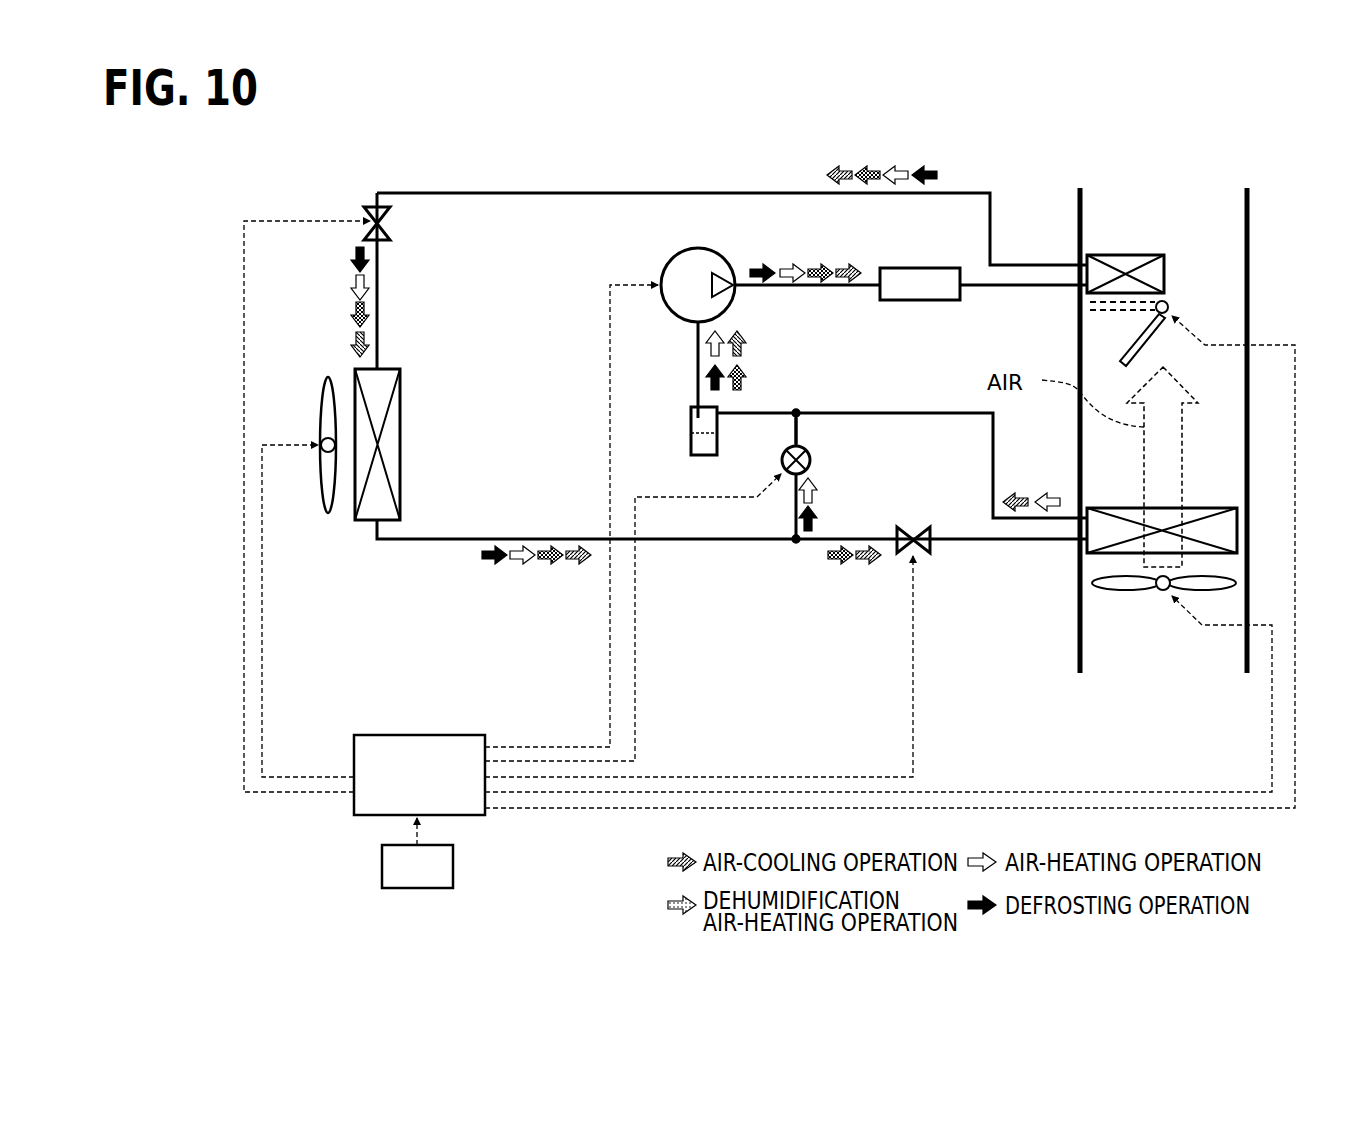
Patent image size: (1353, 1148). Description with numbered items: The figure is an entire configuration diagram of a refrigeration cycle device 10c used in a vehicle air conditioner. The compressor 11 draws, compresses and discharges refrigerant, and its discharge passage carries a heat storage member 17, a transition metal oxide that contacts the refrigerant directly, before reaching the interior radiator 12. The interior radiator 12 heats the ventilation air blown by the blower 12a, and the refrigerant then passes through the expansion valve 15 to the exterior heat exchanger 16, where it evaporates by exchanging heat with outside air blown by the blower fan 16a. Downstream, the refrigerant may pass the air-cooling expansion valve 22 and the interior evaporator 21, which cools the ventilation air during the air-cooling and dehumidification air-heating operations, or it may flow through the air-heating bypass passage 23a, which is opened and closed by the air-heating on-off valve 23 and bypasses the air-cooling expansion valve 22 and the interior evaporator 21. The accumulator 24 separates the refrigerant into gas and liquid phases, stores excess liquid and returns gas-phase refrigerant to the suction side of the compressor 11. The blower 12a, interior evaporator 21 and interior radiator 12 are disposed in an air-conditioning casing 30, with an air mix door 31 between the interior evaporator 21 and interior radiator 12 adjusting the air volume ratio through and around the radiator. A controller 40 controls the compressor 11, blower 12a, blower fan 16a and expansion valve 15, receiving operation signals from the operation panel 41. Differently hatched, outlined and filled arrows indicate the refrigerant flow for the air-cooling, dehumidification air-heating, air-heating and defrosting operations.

The refrigeration cycle device 10c is at (968, 172).
The compressor 11 is at (722, 258).
The interior radiator 12 is at (1128, 255).
The blower 12a is at (1130, 591).
The expansion valve 15 is at (372, 212).
The exterior heat exchanger 16 is at (401, 420).
The blower fan 16a is at (323, 498).
The heat storage member 17 is at (920, 268).
The interior evaporator 21 is at (1200, 508).
The air-cooling expansion valve 22 is at (916, 535).
The air-heating on-off valve 23 is at (786, 451).
The air-heating bypass passage 23a is at (800, 432).
The accumulator 24 is at (690, 448).
The air-conditioning casing 30 is at (1249, 273).
The air mix door 31 is at (1170, 304).
The controller 40 is at (417, 735).
The operation panel 41 is at (453, 858).